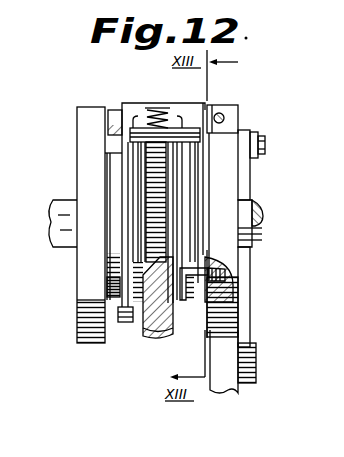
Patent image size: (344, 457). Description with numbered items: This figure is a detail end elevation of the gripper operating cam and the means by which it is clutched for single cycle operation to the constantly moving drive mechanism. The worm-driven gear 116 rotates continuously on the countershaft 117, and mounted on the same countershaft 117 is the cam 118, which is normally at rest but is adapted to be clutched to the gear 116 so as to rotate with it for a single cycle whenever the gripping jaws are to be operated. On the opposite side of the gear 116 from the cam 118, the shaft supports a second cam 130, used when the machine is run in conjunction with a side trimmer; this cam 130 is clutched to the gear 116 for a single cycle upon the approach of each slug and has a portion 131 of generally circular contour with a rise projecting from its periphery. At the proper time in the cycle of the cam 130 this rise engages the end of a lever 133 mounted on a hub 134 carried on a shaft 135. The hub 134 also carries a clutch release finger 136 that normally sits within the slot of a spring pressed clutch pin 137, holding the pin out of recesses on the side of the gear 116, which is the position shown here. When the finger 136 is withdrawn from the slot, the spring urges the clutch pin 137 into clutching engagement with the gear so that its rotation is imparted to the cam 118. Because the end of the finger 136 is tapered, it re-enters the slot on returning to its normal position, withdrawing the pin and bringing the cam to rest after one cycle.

The gear 116 is at (156, 339).
The countershaft 117 is at (251, 206).
The cam 118 is at (232, 318).
The cam 130 is at (93, 343).
The portion of generally circular contour 131 is at (125, 323).
The lever 133 is at (107, 284).
The hub 134 is at (176, 106).
The shaft 135 is at (224, 121).
The clutch release finger 136 is at (205, 181).
The clutch pin 137 is at (176, 327).